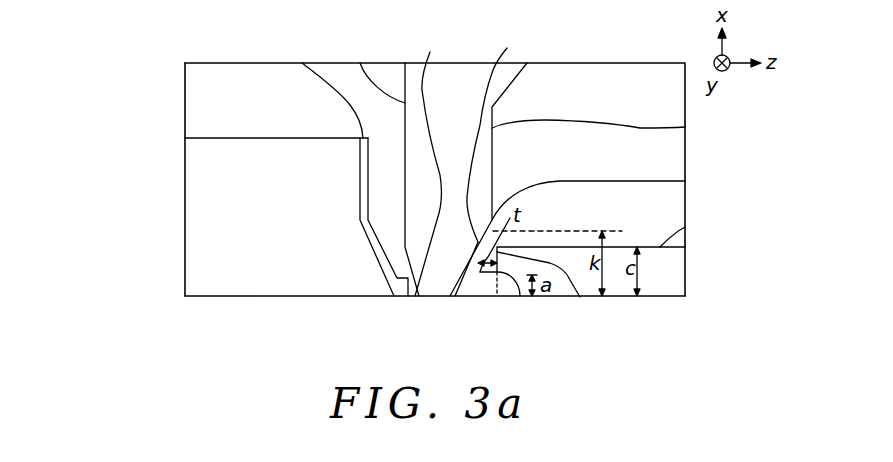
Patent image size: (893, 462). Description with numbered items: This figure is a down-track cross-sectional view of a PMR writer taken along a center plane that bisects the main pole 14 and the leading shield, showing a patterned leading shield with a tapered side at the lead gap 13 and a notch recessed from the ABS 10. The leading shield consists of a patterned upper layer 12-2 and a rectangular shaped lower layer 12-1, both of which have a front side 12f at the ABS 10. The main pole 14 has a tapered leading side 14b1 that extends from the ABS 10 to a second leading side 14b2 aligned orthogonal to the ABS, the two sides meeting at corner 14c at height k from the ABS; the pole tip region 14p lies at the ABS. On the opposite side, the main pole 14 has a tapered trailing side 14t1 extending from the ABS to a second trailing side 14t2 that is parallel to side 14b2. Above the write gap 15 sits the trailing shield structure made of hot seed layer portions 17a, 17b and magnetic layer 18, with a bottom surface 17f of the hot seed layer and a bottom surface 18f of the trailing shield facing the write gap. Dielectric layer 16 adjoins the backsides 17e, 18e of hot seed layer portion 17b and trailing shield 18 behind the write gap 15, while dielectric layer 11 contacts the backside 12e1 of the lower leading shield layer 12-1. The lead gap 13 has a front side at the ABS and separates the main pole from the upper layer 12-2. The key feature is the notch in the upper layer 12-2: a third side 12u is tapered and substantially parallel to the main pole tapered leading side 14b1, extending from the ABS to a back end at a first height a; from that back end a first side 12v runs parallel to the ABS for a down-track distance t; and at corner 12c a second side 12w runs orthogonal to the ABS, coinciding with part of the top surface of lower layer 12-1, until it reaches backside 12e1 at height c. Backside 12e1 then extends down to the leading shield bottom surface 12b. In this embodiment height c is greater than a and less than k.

The ABS 10 is at (713, 296).
The dielectric layer 11 is at (588, 80).
The lower layer 12-1 is at (673, 272).
The upper layer 12-2 is at (493, 298).
The leading shield bottom surface 12b is at (685, 257).
The corner of the notch 12c is at (505, 298).
The backside 12e1 is at (685, 227).
The front side 12f is at (670, 297).
The third side 12u is at (473, 297).
The first side 12v is at (520, 297).
The second side 12w is at (580, 297).
The lead gap 13 is at (438, 298).
The main pole 14 is at (474, 80).
The tapered leading side 14b1 is at (504, 135).
The second leading side 14b2 is at (685, 127).
The corner 14c is at (685, 181).
The main pole tip portion 14p is at (420, 297).
The tapered trailing side 14t1 is at (432, 162).
The second trailing side 14t2 is at (360, 63).
The write gap 15 is at (402, 300).
The dielectric layer 16 is at (200, 77).
The hot seed layer portion 17a is at (382, 258).
The hot seed layer portion 17b is at (363, 190).
The backside 17e is at (302, 63).
The spacer layer bottom surface 17f is at (398, 298).
The magnetic layer 18 is at (200, 203).
The backside 18e is at (215, 138).
The return yoke bottom surface 18f is at (225, 297).